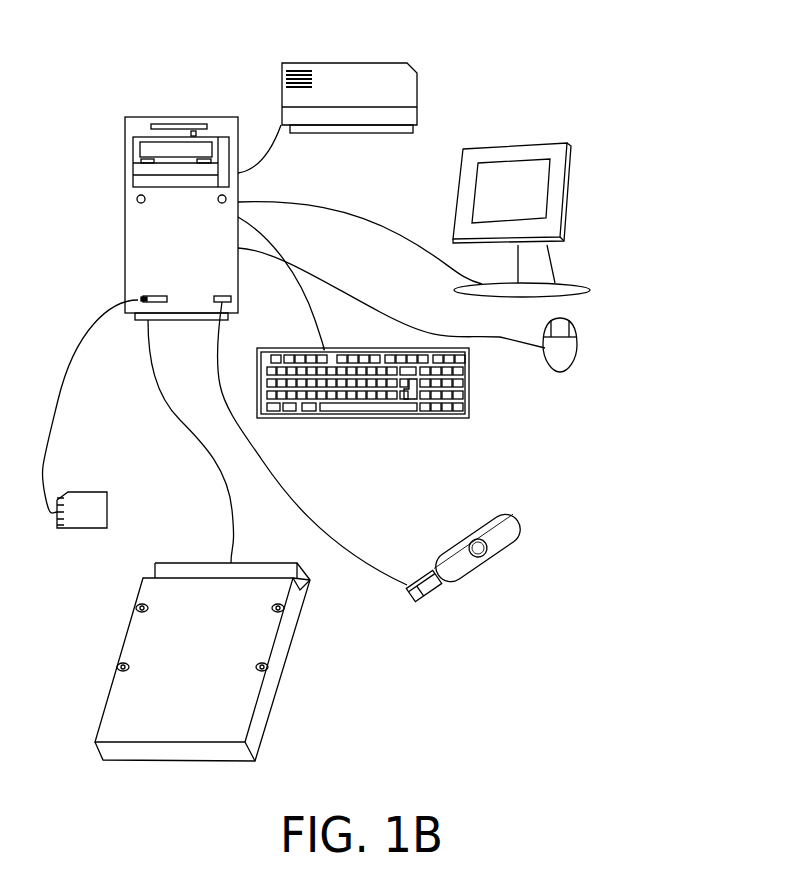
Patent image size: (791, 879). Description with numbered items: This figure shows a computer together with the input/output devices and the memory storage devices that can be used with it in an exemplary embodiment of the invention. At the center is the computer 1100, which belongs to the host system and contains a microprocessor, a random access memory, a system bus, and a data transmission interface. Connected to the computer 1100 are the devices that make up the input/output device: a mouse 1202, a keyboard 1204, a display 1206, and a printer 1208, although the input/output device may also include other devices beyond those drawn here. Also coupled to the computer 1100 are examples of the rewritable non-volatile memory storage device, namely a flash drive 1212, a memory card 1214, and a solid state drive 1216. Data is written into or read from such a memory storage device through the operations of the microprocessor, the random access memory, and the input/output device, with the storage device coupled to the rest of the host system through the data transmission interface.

The computer 1100 is at (183, 117).
The mouse 1202 is at (577, 350).
The keyboard 1204 is at (469, 395).
The display 1206 is at (522, 143).
The printer 1208 is at (343, 63).
The flash drive 1212 is at (458, 543).
The memory card 1214 is at (108, 500).
The solid state drive 1216 is at (253, 555).